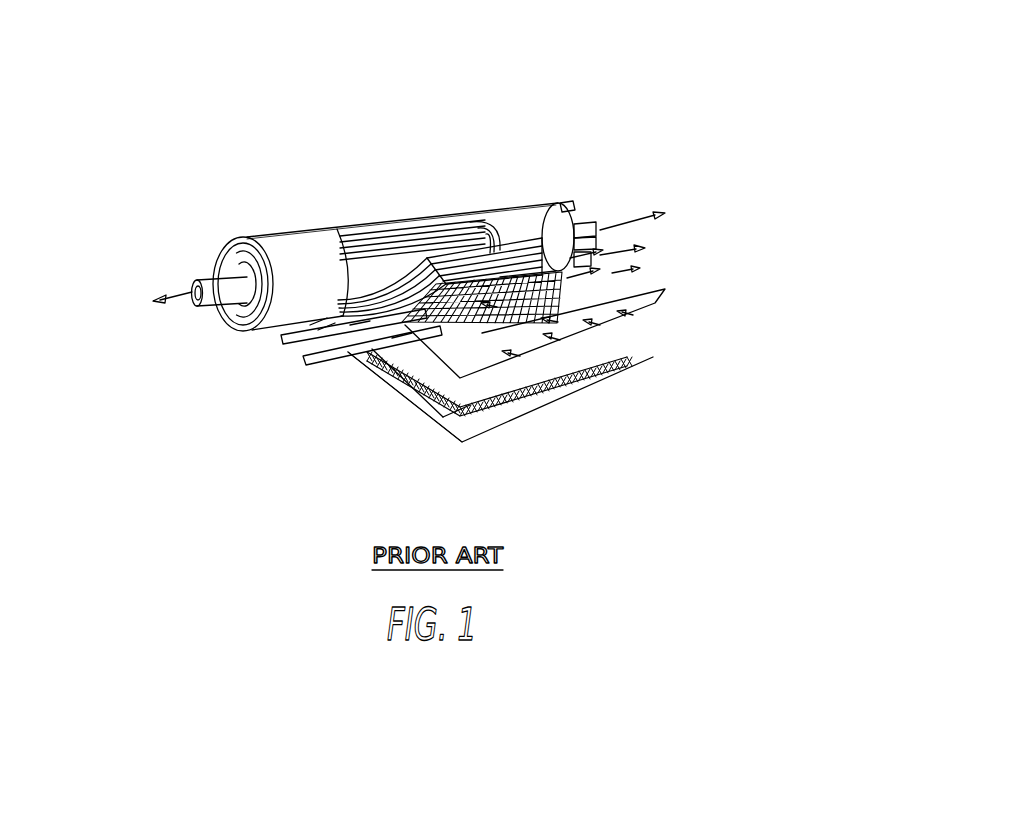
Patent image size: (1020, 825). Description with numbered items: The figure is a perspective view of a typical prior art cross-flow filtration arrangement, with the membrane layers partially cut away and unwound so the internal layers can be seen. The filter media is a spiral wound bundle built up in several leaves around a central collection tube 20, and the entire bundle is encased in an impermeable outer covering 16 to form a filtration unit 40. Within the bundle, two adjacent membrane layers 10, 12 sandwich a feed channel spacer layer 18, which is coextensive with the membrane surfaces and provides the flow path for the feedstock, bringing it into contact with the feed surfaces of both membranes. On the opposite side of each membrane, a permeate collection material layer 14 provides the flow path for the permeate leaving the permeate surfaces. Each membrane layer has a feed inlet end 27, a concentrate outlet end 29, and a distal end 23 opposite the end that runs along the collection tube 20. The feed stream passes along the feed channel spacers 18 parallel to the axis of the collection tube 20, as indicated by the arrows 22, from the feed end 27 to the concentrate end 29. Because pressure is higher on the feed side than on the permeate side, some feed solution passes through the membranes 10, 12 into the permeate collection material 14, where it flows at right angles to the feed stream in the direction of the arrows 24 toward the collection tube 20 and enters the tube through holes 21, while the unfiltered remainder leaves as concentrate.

The filtration unit 40 is at (633, 82).
The collection tube 20 is at (460, 250).
The holes 21 is at (372, 263).
The feed inlet end 27 is at (220, 247).
The arrows 22 is at (233, 320).
The concentrate outlet end 29 is at (582, 213).
The membrane layer 10 is at (390, 372).
The permeate collection material layer 14 is at (412, 396).
The membrane layer 12 is at (443, 413).
The feed channel spacer layer 18 is at (460, 442).
The impermeable outer covering 16 is at (517, 413).
The distal end 23 is at (552, 405).
The arrows 24 is at (593, 381).